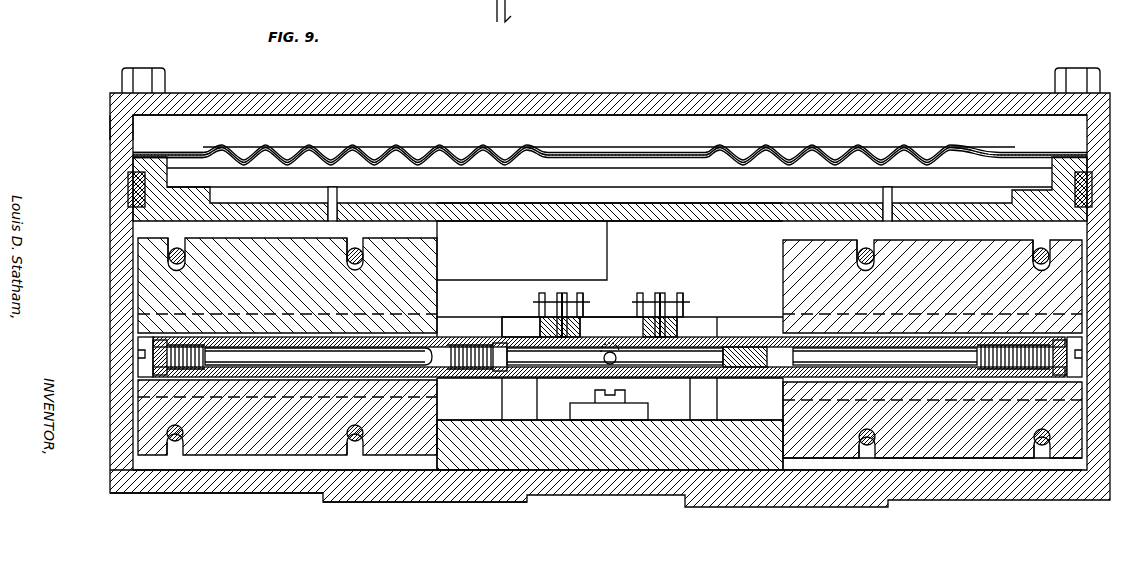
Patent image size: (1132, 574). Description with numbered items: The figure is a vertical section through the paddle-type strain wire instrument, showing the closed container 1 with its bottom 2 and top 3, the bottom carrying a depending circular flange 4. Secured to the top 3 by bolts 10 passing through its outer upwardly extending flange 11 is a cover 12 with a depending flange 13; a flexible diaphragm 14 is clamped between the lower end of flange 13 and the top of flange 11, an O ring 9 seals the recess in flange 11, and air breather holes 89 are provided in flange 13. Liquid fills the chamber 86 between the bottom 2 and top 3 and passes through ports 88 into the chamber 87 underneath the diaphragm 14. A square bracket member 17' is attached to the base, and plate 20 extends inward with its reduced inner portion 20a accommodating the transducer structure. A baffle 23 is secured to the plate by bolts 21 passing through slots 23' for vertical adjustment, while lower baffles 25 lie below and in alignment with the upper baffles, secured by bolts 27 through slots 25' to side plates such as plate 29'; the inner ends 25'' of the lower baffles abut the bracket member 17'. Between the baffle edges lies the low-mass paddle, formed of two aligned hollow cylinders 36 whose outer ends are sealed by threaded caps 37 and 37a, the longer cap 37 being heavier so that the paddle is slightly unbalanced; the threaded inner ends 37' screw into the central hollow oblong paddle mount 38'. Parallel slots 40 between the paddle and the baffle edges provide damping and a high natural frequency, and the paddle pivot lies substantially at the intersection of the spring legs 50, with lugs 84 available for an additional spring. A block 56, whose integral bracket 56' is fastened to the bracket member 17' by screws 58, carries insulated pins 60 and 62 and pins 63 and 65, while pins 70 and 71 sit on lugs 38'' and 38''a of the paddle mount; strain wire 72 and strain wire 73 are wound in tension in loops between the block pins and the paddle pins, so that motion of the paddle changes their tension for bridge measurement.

The container 1 is at (130, 318).
The bottom 2 is at (155, 482).
The top 3 is at (662, 218).
The depending circular flange 4 is at (320, 490).
The O ring 9 is at (128, 192).
The bolts 10 is at (166, 80).
The outer upwardly extending flange 11 is at (127, 165).
The cover 12 is at (530, 96).
The depending flange 13 is at (112, 126).
The flexible diaphragm 14 is at (412, 147).
The square bracket member 17' is at (610, 437).
The plate 20 is at (267, 218).
The inner portion of plate 20a is at (586, 232).
The bolts 21 is at (184, 252).
The baffle 23 is at (610, 278).
The slots 23' is at (621, 243).
The lower baffles 25 is at (610, 449).
The slots 25' is at (603, 459).
The inner ends of lower baffles 25'' is at (610, 424).
The bolts 27 is at (167, 436).
The plate 29' is at (932, 488).
The hollow cylinders 36 is at (380, 358).
The threaded cap 37 is at (1030, 427).
The threaded inner ends 37' is at (742, 355).
The threaded cap 37a is at (138, 357).
The paddle mount 38' is at (612, 399).
The lug 38'' is at (577, 318).
The lug 38''a is at (691, 314).
The parallel slots 40 is at (138, 335).
The legs of spring 50 is at (511, 22).
The block 56 is at (611, 296).
The bracket 56' is at (589, 396).
The screws 58 is at (628, 397).
The pin 60 is at (530, 307).
The pin 62 is at (562, 292).
The pin 63 is at (640, 292).
The pin 65 is at (684, 297).
The pin 70 is at (540, 330).
The pin 71 is at (660, 292).
The strain wire 72 is at (541, 292).
The strain wire 73 is at (680, 292).
The lugs 84 is at (477, 330).
The chamber 86 is at (695, 248).
The chamber 87 is at (609, 177).
The ports 88 is at (331, 203).
The air breather holes 89 is at (640, 129).